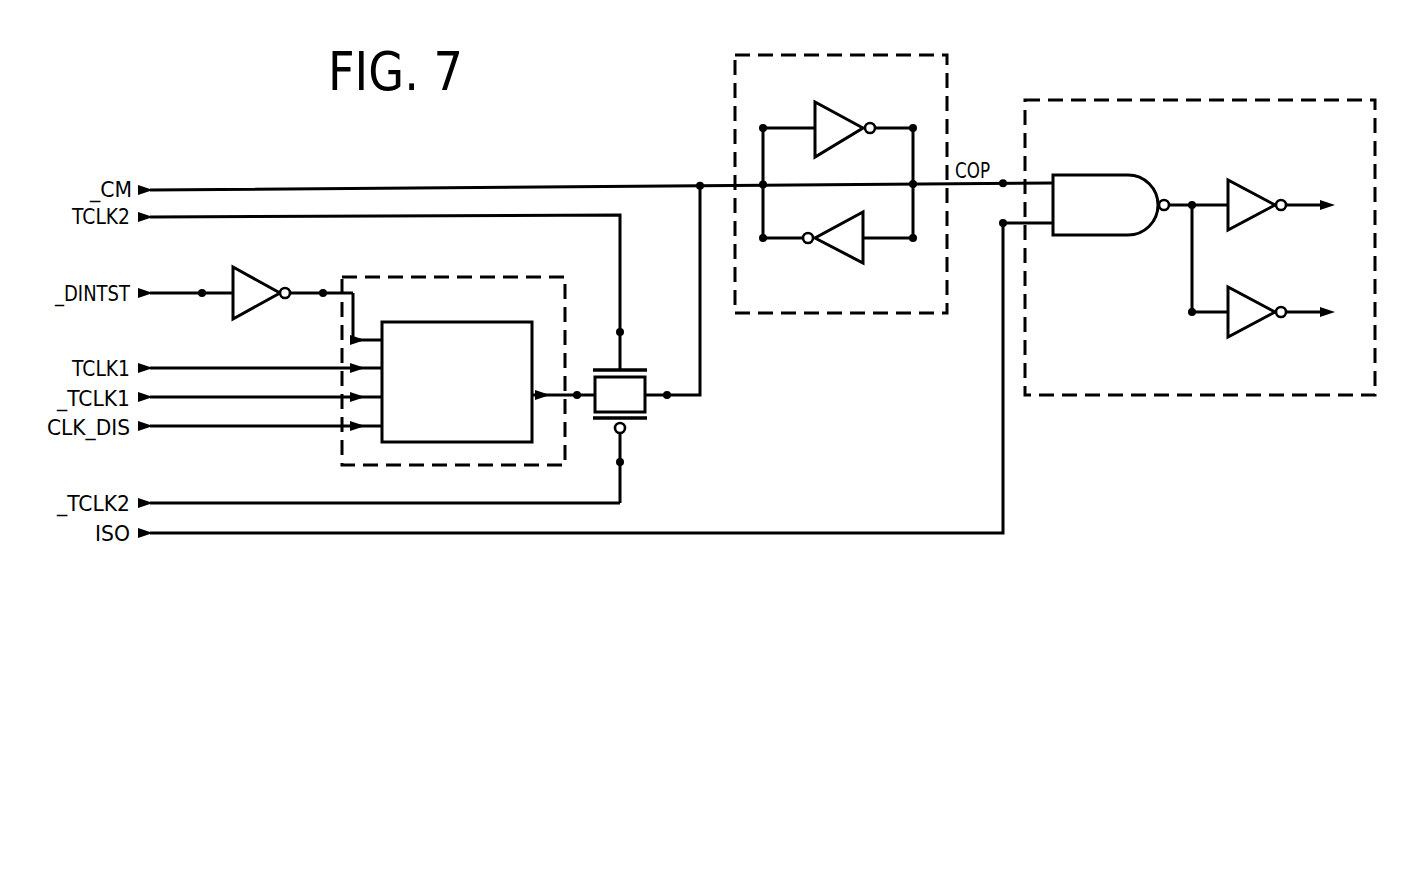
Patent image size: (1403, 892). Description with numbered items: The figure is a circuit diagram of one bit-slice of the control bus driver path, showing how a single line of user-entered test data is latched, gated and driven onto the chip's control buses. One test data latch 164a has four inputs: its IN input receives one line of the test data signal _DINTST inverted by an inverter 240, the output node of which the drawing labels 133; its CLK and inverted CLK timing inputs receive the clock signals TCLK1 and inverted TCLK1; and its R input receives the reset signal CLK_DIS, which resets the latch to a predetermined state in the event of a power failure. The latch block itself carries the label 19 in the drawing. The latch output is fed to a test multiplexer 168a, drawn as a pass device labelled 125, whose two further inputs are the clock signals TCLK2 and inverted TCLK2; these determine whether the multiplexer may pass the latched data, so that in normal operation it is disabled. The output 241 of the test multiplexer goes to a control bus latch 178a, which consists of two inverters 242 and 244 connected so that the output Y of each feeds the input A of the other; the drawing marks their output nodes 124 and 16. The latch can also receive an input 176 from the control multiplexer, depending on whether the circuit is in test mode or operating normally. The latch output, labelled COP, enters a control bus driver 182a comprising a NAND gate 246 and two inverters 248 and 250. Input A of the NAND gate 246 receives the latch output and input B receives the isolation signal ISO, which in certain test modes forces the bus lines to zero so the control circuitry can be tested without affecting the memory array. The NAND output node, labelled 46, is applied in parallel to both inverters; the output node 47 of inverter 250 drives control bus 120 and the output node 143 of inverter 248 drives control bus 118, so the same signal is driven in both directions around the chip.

The input from control multiplexer 176 is at (626, 187).
The inverter 240 is at (260, 276).
The inverter output node 133 is at (315, 308).
The D latch 19 is at (487, 350).
The test data latch 164a is at (342, 455).
The test multiplexer 168a is at (618, 405).
The transistor 125 is at (620, 394).
The output of test multiplexer 241 is at (703, 388).
The control bus latch 178a is at (947, 90).
The inverter 242 is at (840, 112).
The node 124 is at (885, 134).
The inverter 244 is at (862, 258).
The node 16 is at (791, 244).
The control bus driver 182a is at (1252, 95).
The NAND gate 246 is at (1137, 235).
The node 46 is at (1193, 245).
The inverter 250 is at (1260, 188).
The node 47 is at (1299, 206).
The control bus 120 is at (1332, 212).
The inverter 248 is at (1232, 327).
The node 143 is at (1296, 314).
The control bus 118 is at (1333, 322).